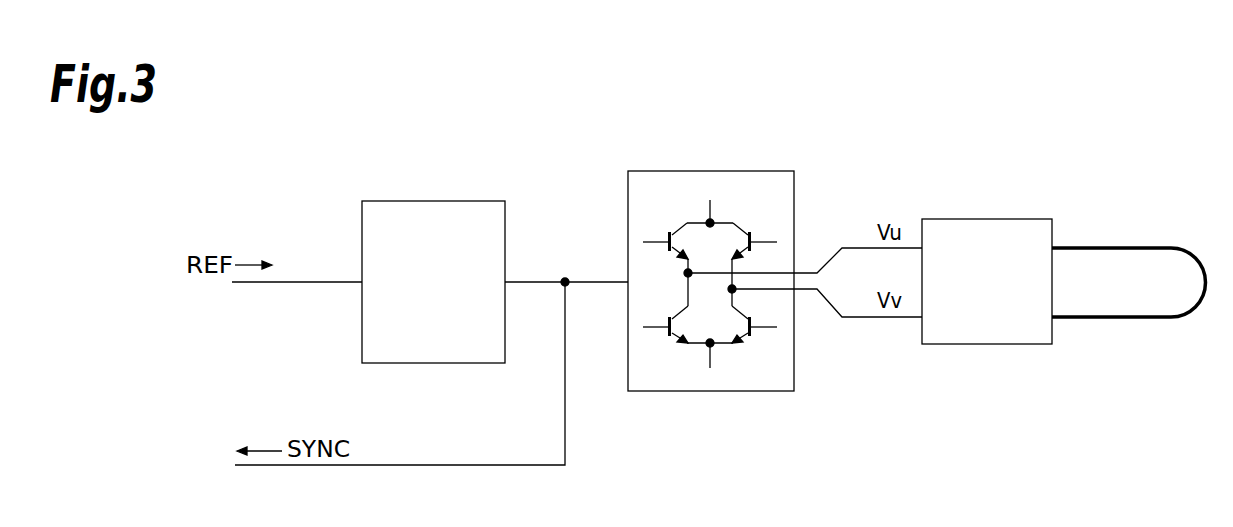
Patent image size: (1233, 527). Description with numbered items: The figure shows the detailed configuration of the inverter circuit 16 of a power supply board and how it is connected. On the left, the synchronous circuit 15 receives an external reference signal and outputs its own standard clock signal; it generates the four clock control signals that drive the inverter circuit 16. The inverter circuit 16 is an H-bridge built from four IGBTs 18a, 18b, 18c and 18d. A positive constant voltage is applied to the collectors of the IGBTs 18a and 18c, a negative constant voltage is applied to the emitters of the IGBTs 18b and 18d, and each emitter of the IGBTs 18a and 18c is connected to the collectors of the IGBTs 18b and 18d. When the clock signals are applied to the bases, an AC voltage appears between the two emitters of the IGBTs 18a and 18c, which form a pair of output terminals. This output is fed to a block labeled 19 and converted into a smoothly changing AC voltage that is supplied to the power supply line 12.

The power supply line 12 is at (1143, 248).
The synchronous circuit 15 is at (462, 201).
The inverter circuit 16 is at (755, 171).
The IGBT 18a is at (668, 232).
The IGBT 18b is at (668, 336).
The IGBT 18c is at (752, 232).
The IGBT 18d is at (752, 336).
The resonance circuit 19 is at (1004, 219).